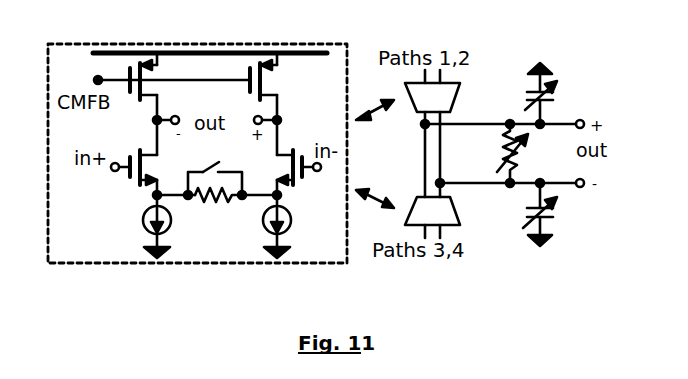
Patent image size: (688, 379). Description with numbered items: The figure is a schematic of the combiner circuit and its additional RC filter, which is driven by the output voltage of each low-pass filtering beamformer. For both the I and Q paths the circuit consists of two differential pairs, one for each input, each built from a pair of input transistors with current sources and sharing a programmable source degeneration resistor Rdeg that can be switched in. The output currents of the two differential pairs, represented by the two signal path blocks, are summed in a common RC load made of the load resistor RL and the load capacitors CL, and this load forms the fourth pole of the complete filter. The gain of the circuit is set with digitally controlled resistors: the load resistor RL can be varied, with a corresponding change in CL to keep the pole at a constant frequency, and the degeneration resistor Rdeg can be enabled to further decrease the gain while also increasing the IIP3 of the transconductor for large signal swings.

The degeneration resistor Rdeg is at (217, 200).
The load resistor RL is at (497, 153).
The load capacitor CL is at (551, 154).